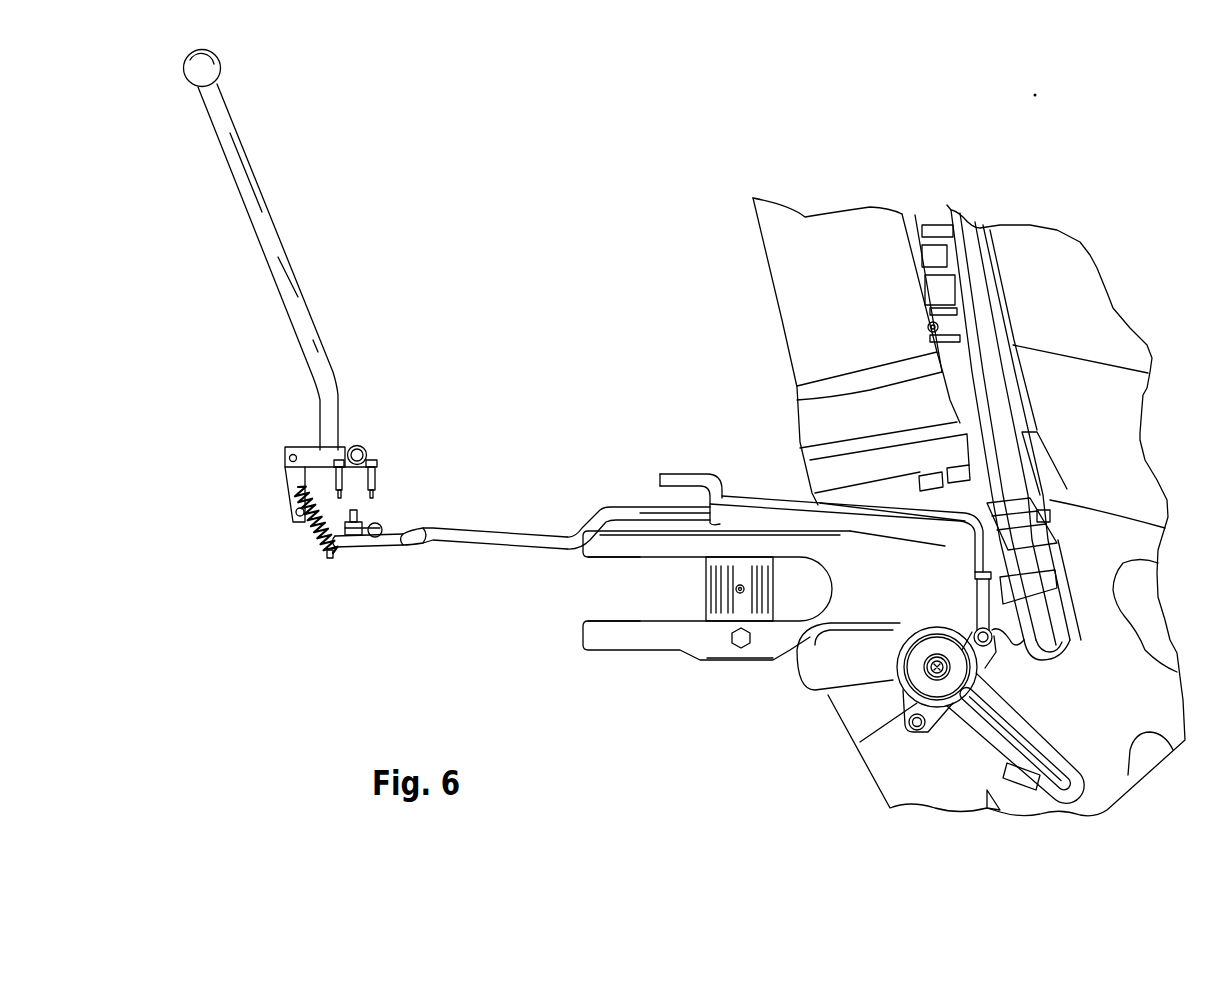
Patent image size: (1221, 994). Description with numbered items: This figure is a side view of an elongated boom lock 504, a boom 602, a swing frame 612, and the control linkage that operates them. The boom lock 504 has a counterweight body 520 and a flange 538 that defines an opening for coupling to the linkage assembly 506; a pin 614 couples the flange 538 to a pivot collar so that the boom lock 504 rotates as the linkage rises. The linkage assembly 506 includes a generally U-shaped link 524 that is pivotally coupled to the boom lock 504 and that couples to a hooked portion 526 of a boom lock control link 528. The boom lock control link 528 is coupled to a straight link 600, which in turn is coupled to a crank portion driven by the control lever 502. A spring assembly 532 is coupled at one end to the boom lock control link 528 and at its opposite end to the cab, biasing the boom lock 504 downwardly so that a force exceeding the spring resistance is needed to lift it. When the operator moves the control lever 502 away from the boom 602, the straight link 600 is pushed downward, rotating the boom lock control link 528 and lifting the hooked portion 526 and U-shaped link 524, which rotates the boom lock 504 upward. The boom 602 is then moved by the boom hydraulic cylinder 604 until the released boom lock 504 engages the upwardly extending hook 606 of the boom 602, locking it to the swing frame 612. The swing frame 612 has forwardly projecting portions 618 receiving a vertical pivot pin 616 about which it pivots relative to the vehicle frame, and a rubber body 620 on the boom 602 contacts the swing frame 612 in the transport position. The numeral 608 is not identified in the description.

The control lever 502 is at (268, 230).
The boom lock 504 is at (1041, 719).
The linkage assembly 506 is at (523, 453).
The counterweight body 520 is at (820, 665).
The U-shaped link 524 is at (738, 497).
The hooked portion 526 is at (680, 475).
The boom lock control link 528 is at (413, 548).
The spring assembly 532 is at (322, 540).
The flange 538 is at (1048, 668).
The straight link 600 is at (312, 467).
The boom 602 is at (1080, 309).
The boom hydraulic cylinder 604 is at (875, 309).
The upwardly extending hook 606 is at (1010, 637).
The pivot bolt 608 is at (935, 672).
The swing frame 612 is at (780, 652).
The pin 614 is at (970, 627).
The vertical pivot pin 616 is at (705, 585).
The forwardly projecting portion 618 is at (585, 635).
The rubber body 620 is at (1000, 578).